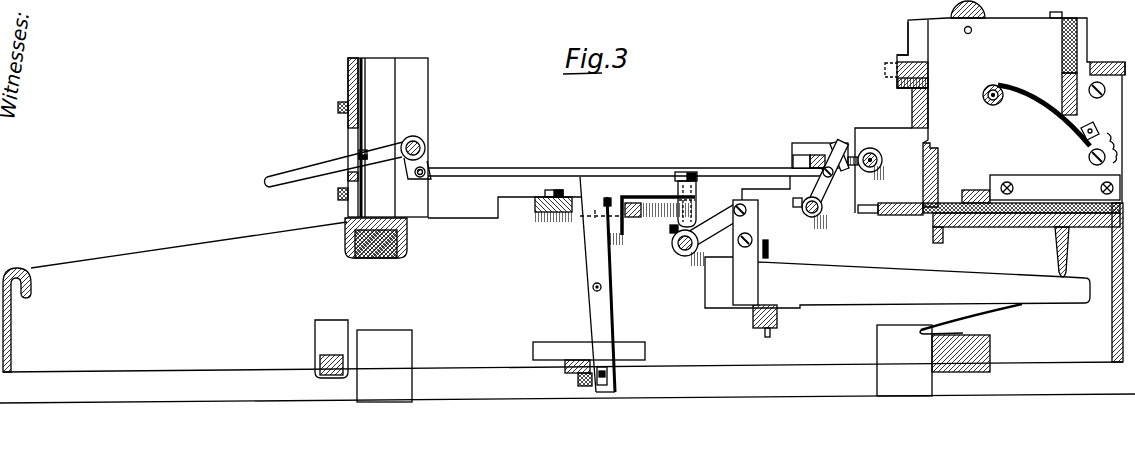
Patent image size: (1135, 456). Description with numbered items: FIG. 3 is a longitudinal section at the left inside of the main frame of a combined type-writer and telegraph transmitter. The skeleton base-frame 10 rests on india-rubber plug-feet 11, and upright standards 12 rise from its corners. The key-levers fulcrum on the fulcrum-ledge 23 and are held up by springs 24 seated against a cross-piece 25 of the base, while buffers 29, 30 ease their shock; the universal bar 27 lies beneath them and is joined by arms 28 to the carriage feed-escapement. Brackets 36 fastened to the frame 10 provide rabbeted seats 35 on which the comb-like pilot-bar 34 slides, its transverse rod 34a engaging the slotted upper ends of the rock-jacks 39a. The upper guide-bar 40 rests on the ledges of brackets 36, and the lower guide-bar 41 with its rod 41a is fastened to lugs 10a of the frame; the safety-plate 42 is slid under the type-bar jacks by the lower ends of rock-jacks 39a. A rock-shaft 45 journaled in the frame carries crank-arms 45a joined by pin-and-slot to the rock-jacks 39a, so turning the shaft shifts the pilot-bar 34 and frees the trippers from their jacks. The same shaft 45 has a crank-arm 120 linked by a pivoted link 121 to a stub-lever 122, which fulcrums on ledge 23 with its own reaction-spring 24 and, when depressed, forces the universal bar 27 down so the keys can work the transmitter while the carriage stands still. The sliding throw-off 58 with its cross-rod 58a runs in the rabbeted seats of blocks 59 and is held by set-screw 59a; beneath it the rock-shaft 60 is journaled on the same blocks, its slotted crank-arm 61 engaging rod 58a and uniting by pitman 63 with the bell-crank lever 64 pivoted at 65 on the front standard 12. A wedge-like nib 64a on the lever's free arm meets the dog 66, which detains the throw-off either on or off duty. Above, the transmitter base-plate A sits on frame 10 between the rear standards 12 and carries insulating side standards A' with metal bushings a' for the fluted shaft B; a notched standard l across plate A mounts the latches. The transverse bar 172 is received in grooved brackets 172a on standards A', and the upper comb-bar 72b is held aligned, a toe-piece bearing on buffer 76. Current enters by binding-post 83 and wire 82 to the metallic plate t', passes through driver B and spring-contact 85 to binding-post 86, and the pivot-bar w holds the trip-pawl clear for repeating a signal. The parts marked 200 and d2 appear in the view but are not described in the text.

The skeleton base-frame 10 is at (563, 297).
The lugs 10a is at (645, 347).
The india-rubber plug-feet 11 is at (906, 390).
The upright standards 12 is at (383, 137).
The fulcrum-ledge 23 is at (1055, 245).
The springs 24 is at (957, 321).
The cross-piece 25 is at (985, 350).
The universal bar 27 is at (765, 330).
The arms 28 is at (770, 253).
The buffer 29 is at (382, 260).
The buffer 30 is at (328, 357).
The pilot-bar 34 is at (637, 218).
The transverse rod 34a is at (610, 198).
The rabbeted seats 35 is at (642, 196).
The brackets 36 is at (515, 212).
The rock-jacks 39a is at (602, 267).
The upper guide-bar 40 is at (556, 190).
The lower guide-bar 41 is at (572, 360).
The rod 41a is at (615, 380).
The safety-plate 42 is at (584, 388).
The rock-shaft 45 is at (682, 257).
The crank-arms 45a is at (694, 200).
The sliding throw-off 58 is at (817, 153).
The cross-rod 58a is at (839, 142).
The blocks 59 is at (798, 143).
The set-screw 59a is at (793, 160).
The rock-shaft 60 is at (816, 221).
The crank-arm 61 is at (823, 190).
The pitman 63 is at (500, 171).
The bell-crank lever 64 is at (321, 166).
The wedge-like nib 64a is at (366, 160).
The pivot 65 is at (427, 146).
The dog 66 is at (361, 94).
The upper comb-bar 72b is at (912, 102).
The buffer 76 is at (880, 153).
The wire 82 is at (1109, 57).
The binding-post 83 is at (1089, 88).
The spring-contact 85 is at (1044, 115).
The binding-post 86 is at (1088, 162).
The crank-arm 120 is at (707, 226).
The pivoted link 121 is at (757, 222).
The stub-lever 122 is at (897, 282).
The transverse bar 172 is at (885, 70).
The grooved brackets 172a is at (915, 42).
The block 200 is at (893, 216).
The base-plate A is at (1055, 187).
The side standards A' is at (1020, 49).
The fluted shaft B is at (992, 107).
The metal bushings a' is at (977, 99).
The bar d2 is at (1078, 107).
The standard l is at (939, 165).
The metallic plate t' is at (1109, 43).
The pivot-bar w is at (988, 30).